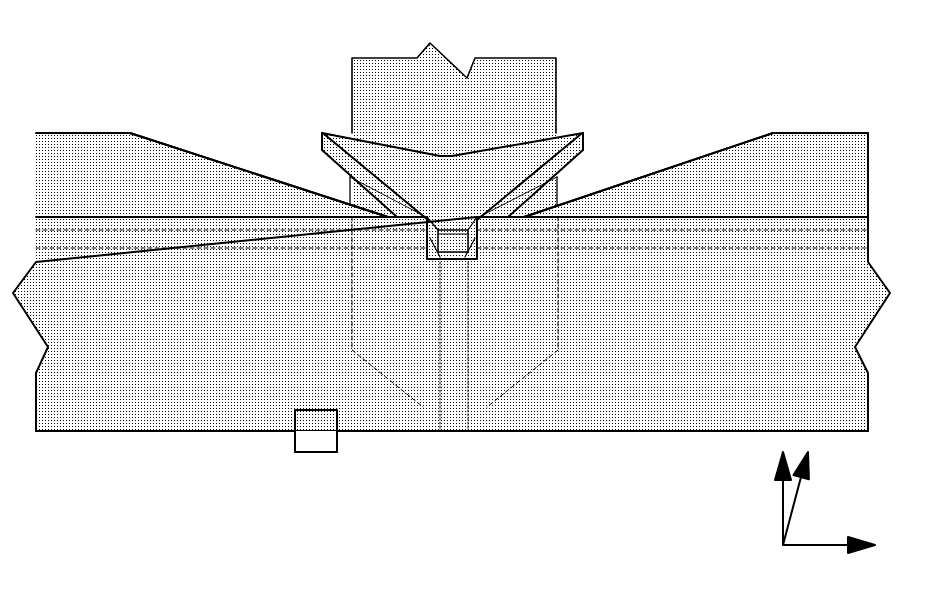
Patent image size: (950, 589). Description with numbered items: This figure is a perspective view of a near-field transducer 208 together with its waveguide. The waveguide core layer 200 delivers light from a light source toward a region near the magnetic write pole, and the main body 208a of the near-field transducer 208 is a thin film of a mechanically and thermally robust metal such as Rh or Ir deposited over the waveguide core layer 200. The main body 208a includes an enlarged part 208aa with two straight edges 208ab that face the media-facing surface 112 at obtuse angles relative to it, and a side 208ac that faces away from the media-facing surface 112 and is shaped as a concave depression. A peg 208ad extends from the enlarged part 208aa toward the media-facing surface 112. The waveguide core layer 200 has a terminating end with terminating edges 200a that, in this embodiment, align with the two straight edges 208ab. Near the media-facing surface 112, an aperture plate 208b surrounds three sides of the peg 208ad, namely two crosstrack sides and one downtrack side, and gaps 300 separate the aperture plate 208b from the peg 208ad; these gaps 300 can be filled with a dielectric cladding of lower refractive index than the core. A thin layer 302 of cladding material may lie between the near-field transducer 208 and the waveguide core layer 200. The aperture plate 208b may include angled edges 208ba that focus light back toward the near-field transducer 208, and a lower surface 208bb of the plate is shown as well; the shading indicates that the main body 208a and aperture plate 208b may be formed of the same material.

The near-field transducer 208 is at (222, 92).
The main body 208a is at (620, 123).
The enlarged part 208aa is at (457, 165).
The straight edges 208ab is at (322, 136).
The side 208ac is at (388, 138).
The peg 208ad is at (437, 262).
The aperture plate 208b is at (302, 242).
The angled edges 208ba is at (152, 138).
The base bottom surface 208bb is at (587, 419).
The waveguide core layer 200 is at (498, 67).
The terminating edges 200a is at (486, 405).
The gaps 300 is at (352, 177).
The thin layer 302 is at (553, 186).
The media-facing surface 112 is at (308, 452).